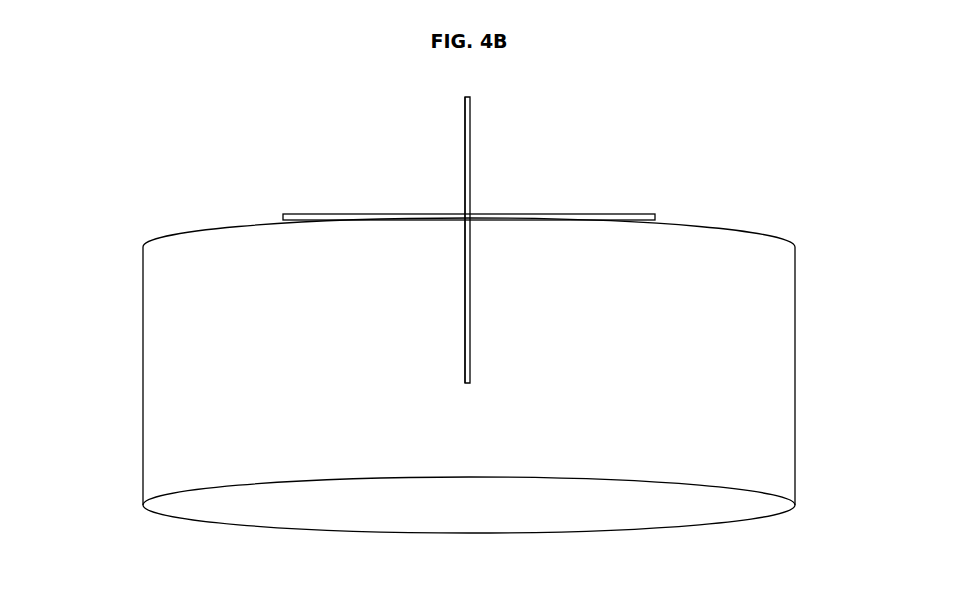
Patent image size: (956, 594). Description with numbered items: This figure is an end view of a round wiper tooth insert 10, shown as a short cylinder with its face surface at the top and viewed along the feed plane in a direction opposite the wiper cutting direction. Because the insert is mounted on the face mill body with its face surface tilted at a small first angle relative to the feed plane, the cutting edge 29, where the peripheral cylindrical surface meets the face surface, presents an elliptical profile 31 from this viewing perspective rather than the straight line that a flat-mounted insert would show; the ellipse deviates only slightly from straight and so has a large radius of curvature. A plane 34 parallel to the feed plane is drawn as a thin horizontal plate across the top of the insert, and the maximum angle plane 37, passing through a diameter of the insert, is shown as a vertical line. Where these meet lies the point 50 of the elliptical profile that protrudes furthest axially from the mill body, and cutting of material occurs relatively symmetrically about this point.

The wiper tooth insert 10 is at (110, 312).
The cutting edge 29 is at (202, 230).
The cutting edge profile 31 is at (737, 230).
The plane parallel to the feed plane 34 is at (645, 214).
The maximum angle plane 37 is at (470, 156).
The point of furthest axial protrusion 50 is at (463, 213).